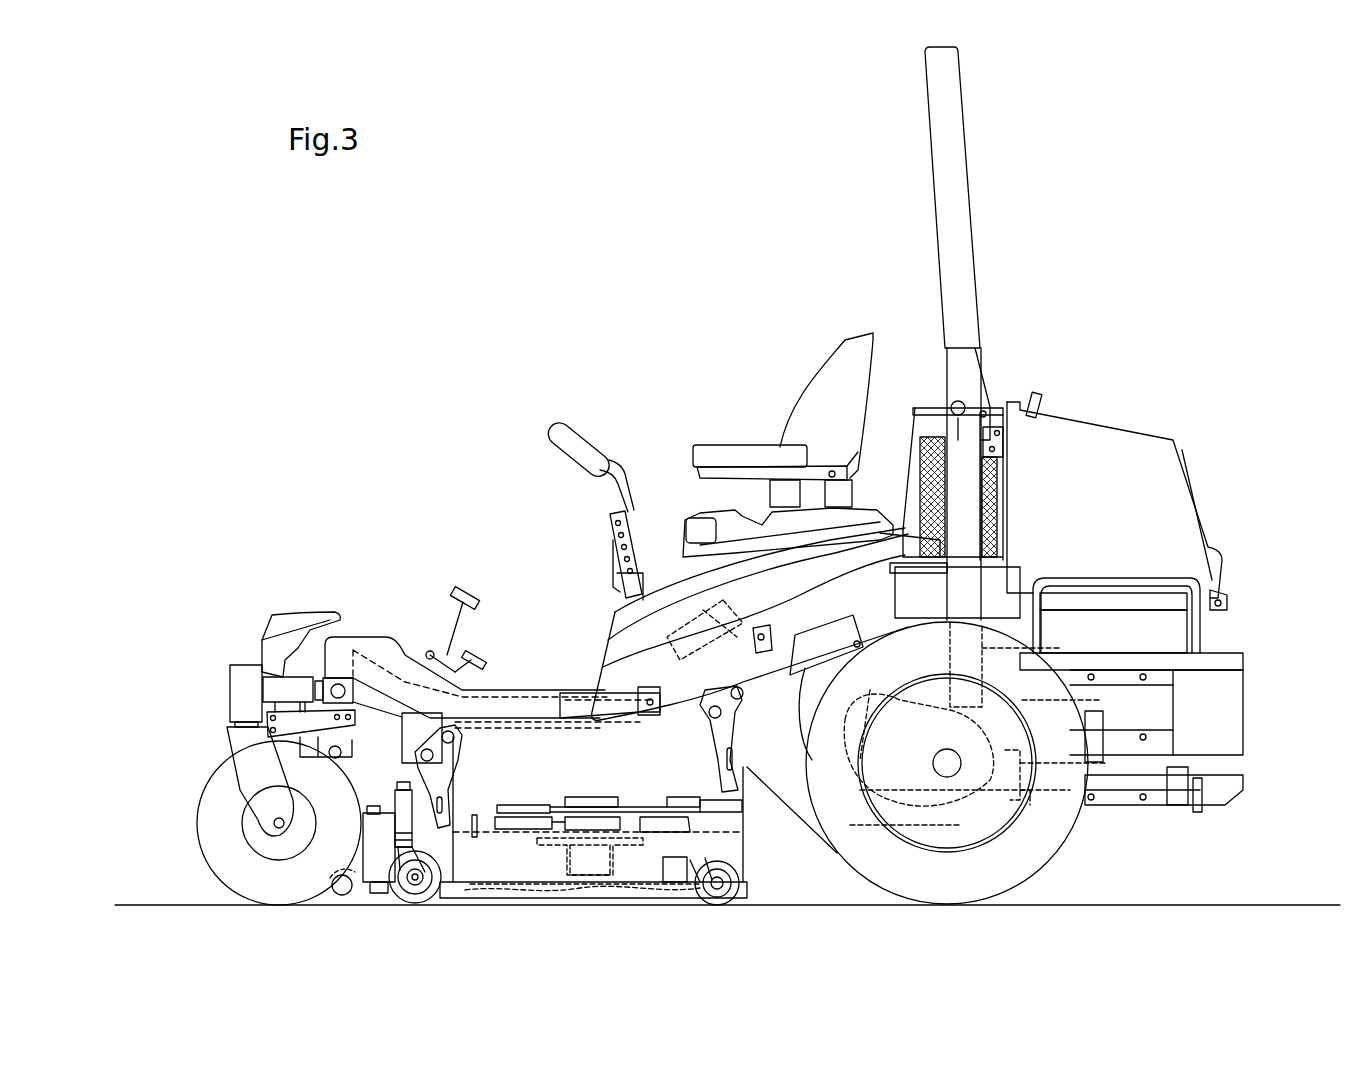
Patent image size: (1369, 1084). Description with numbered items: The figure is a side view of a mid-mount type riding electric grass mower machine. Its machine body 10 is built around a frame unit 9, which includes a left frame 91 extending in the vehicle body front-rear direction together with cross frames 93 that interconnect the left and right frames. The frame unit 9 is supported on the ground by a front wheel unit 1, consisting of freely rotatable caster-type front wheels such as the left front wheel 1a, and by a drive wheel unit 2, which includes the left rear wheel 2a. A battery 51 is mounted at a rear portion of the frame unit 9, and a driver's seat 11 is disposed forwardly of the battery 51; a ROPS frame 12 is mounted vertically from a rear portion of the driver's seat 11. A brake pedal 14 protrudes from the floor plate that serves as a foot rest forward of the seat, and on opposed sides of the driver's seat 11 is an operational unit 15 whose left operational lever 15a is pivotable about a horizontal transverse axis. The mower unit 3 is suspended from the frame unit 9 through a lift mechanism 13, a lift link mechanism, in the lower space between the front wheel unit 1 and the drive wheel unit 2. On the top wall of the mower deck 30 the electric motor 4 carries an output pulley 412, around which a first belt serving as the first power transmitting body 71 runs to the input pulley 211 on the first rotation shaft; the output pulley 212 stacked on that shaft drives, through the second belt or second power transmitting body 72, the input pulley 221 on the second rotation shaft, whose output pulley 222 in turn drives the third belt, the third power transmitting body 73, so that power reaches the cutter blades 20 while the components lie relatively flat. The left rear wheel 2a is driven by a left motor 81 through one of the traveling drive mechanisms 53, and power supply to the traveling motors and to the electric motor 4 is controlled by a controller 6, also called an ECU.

The machine body 10 is at (425, 420).
The front wheel unit 1 is at (223, 785).
The left front wheel 1a is at (212, 834).
The drive wheel unit 2 is at (979, 763).
The left rear wheel 2a is at (1047, 855).
The mower unit 3 is at (758, 866).
The electric motor 4 is at (710, 827).
The controller 6 is at (1125, 598).
The frame unit 9 is at (393, 668).
The driver's seat 11 is at (805, 415).
The ROPS frame 12 is at (957, 142).
The lift mechanism 13 is at (412, 770).
The brake pedal 14 is at (471, 597).
The operational unit 15 is at (604, 479).
The left operational lever 15a is at (586, 438).
The cutter blades 20 is at (542, 890).
The mower deck 30 is at (735, 853).
The battery 51 is at (1153, 703).
The traveling drive mechanisms 53 is at (948, 822).
The first power transmitting body 71 is at (640, 808).
The second power transmitting body 72 is at (598, 823).
The third power transmitting body 73 is at (490, 812).
The left motor 81 is at (838, 668).
The left frame 91 is at (524, 697).
The cross frames 93 is at (305, 670).
The input pulley 211 is at (625, 785).
The output pulley 212 is at (594, 797).
The input pulley 221 is at (527, 790).
The output pulley 222 is at (506, 805).
The output pulley 412 is at (702, 803).